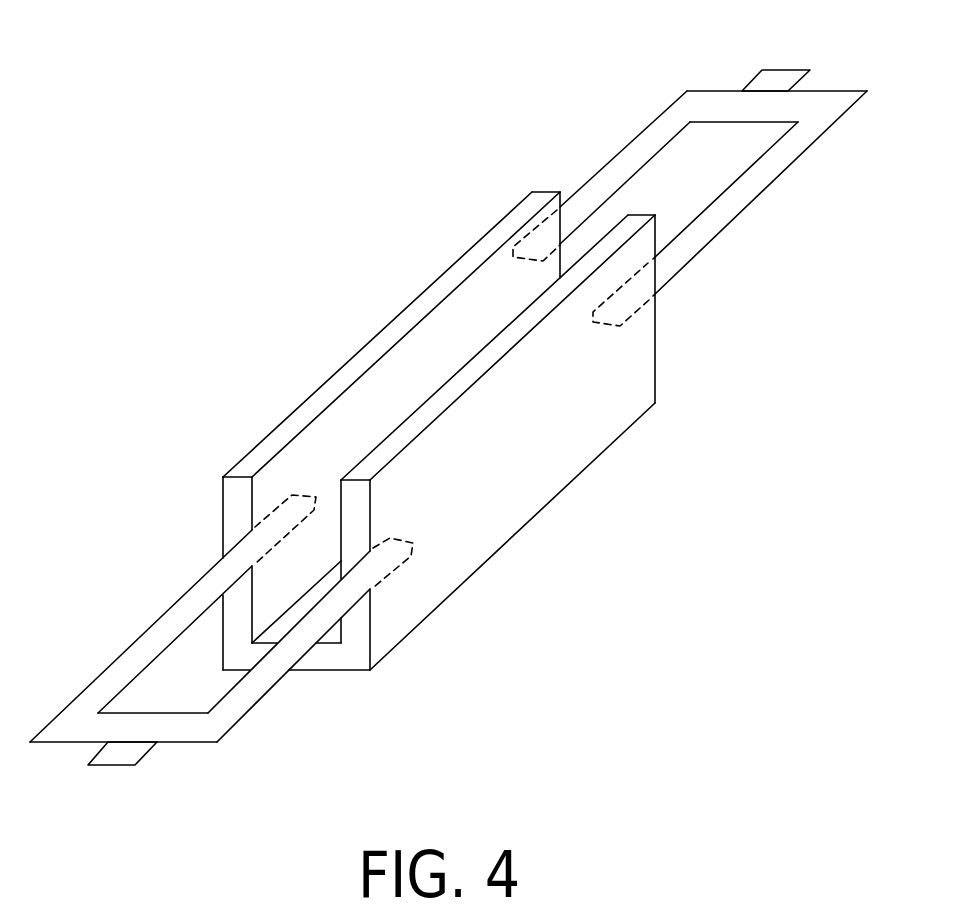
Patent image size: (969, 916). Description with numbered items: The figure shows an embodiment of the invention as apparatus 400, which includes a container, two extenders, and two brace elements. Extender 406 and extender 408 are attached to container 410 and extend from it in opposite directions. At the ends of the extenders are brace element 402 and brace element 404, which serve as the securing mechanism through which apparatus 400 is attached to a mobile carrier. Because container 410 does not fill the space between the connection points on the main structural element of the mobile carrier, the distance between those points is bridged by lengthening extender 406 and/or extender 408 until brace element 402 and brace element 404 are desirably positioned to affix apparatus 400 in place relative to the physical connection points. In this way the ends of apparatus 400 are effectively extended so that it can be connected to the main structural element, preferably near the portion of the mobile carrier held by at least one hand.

The apparatus 400 is at (548, 540).
The brace element 402 is at (115, 766).
The brace element 404 is at (791, 70).
The extender 406 is at (160, 618).
The extender 408 is at (622, 147).
The container 410 is at (386, 324).